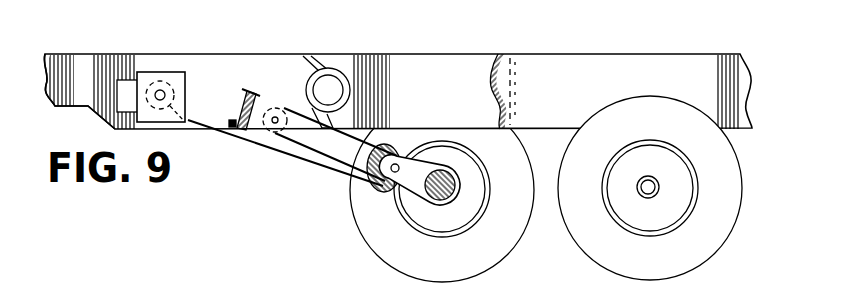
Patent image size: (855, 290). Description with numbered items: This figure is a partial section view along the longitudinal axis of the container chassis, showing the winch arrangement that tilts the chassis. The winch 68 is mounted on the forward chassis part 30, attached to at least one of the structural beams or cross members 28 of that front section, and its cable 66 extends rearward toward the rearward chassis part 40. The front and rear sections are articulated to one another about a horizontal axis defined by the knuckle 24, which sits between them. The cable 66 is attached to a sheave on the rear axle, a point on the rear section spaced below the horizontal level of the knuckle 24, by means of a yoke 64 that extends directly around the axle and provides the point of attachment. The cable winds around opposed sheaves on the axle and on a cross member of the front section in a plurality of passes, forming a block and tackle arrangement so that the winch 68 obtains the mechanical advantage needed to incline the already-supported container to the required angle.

The knuckle 24 is at (335, 92).
The cross member 28 is at (247, 115).
The forward chassis part 30 is at (88, 68).
The rearward chassis part 40 is at (608, 63).
The yoke 64 is at (412, 185).
The cable 66 is at (270, 150).
The winch 68 is at (165, 72).